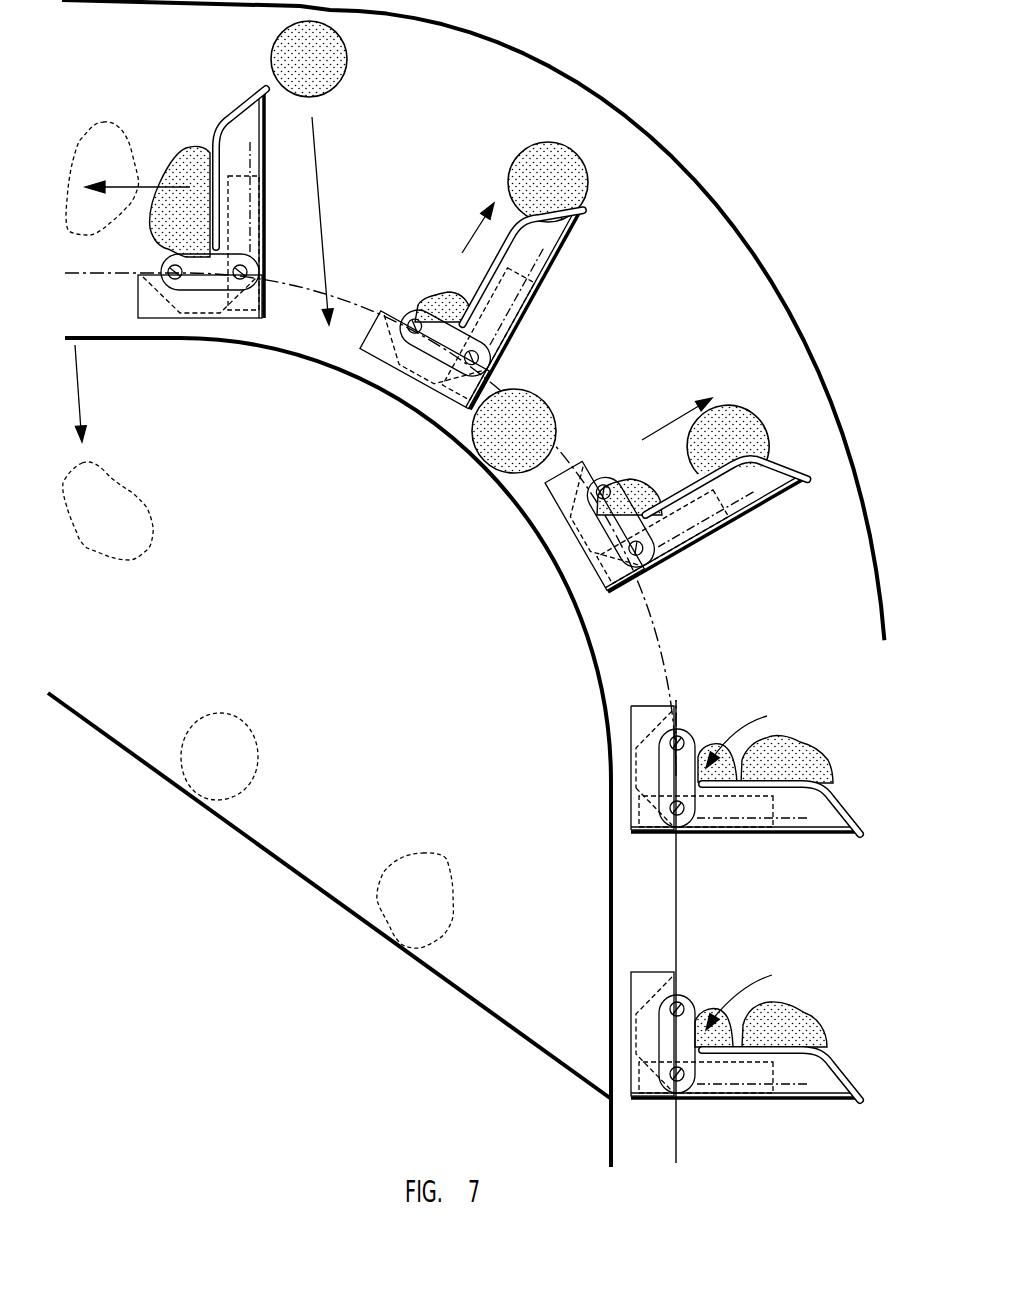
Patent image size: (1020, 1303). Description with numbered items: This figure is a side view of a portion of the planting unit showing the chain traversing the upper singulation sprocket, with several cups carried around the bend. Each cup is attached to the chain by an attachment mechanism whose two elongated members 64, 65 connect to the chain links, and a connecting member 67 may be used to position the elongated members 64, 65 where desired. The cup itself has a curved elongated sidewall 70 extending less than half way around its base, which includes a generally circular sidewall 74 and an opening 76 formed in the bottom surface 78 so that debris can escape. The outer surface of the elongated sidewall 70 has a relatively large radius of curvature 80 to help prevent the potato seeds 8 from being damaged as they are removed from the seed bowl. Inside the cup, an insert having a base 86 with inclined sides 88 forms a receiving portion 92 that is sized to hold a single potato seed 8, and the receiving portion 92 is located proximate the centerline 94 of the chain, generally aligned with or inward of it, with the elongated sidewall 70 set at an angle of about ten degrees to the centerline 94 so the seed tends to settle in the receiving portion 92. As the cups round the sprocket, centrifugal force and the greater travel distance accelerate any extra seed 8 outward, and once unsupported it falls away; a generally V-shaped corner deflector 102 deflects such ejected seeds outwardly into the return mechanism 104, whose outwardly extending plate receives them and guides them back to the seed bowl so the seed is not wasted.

The potato seeds 8 is at (187, 249).
The elongated member 64 is at (670, 733).
The elongated member 65 is at (663, 815).
The connecting member 67 is at (690, 733).
The elongated sidewall 70 is at (787, 823).
The generally circular sidewall 74 is at (648, 713).
The opening 76 is at (635, 777).
The bottom surface 78 is at (635, 732).
The radius of curvature 80 is at (840, 803).
The base 86 is at (647, 798).
The inclined sides 88 is at (638, 747).
The receiving portion 92 is at (751, 865).
The centerline 94 is at (118, 275).
The corner deflector 102 is at (667, 143).
The return mechanism 104 is at (255, 847).